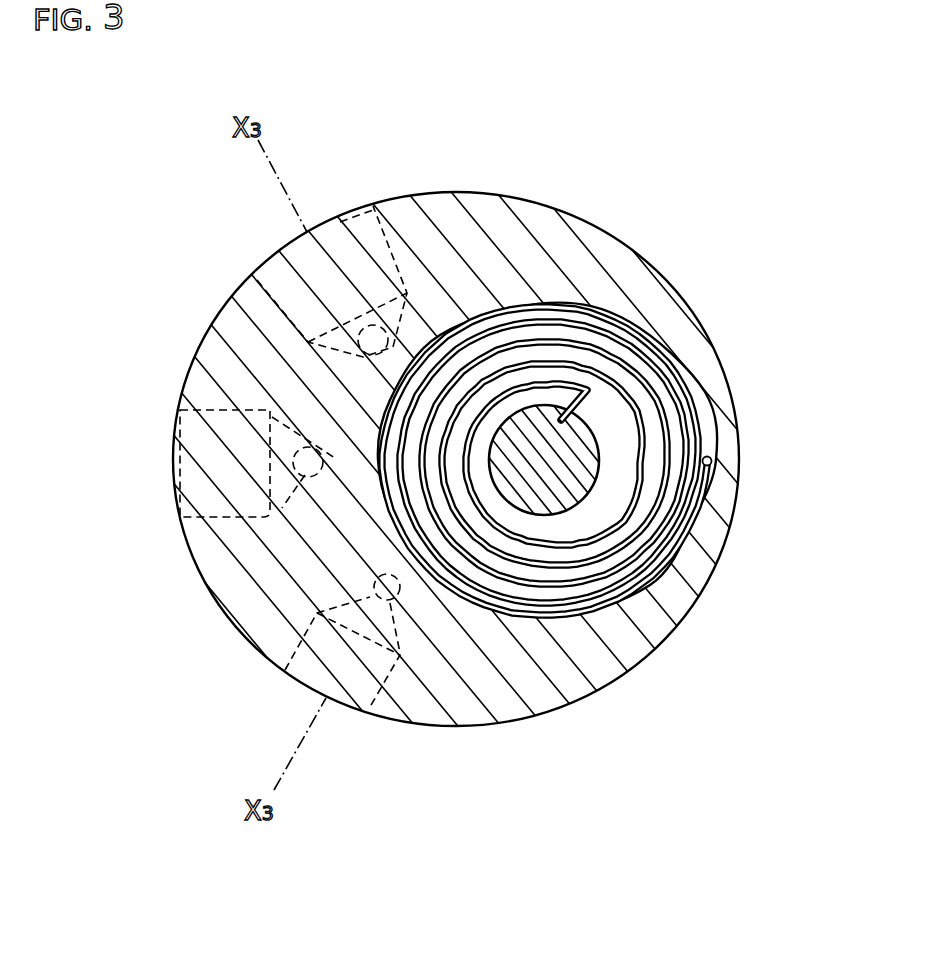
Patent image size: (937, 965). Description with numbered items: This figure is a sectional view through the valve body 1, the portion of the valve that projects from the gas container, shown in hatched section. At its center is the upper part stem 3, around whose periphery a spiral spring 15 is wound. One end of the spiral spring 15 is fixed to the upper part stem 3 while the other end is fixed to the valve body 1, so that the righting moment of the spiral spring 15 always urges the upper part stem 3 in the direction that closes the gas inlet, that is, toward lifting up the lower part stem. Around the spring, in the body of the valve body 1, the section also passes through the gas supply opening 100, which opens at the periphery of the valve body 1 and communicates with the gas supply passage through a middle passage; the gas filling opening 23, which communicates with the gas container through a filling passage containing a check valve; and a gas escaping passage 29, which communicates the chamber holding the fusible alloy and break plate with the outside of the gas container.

The valve body 1 is at (591, 209).
The upper part stem 3 is at (593, 454).
The spiral spring 15 is at (657, 360).
The gas filling opening 23 is at (303, 258).
The gas escaping passage 29 is at (328, 697).
The gas supply opening 100 is at (173, 472).